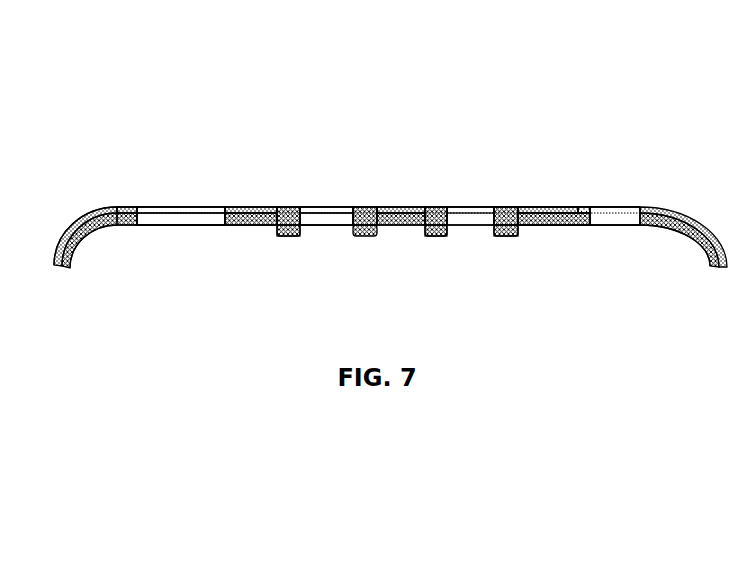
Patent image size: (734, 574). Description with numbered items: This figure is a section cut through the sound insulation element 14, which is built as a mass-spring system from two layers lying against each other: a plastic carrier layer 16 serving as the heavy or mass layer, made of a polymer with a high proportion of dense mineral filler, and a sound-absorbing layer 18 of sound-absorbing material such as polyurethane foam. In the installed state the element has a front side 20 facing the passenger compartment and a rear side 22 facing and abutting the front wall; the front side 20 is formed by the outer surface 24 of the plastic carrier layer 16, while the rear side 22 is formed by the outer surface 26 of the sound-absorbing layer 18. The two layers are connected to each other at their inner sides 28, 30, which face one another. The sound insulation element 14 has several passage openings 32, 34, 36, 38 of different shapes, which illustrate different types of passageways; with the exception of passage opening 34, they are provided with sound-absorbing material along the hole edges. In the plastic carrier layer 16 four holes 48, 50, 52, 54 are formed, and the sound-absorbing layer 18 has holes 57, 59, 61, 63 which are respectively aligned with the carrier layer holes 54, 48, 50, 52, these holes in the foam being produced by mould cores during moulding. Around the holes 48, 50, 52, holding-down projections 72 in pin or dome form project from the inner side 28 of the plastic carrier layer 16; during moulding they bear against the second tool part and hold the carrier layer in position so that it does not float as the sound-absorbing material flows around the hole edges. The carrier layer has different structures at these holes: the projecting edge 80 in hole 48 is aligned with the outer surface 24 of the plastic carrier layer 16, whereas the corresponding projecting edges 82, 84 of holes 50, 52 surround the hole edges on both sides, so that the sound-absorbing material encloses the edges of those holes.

The sound insulation element 14 is at (694, 166).
The plastic carrier layer 16 is at (233, 226).
The sound-absorbing layer 18 is at (96, 214).
The front side 20 is at (590, 252).
The rear side 22 is at (394, 158).
The outer surface of the plastic carrier layer 24 is at (553, 226).
The outer surface of the sound-absorbing layer 26 is at (560, 207).
The inner side of the plastic carrier layer 28 is at (118, 207).
The inner side of the sound-absorbing layer 30 is at (118, 228).
The passage opening 32 is at (628, 207).
The passage opening 34 is at (488, 207).
The passage opening 36 is at (350, 207).
The passage opening 38 is at (200, 207).
The hole 48 is at (573, 226).
The hole 50 is at (447, 228).
The hole 52 is at (345, 228).
The hole 54 is at (150, 226).
The hole in the sound-absorbing layer 57 is at (618, 207).
The hole in the sound-absorbing layer 59 is at (472, 207).
The hole in the sound-absorbing layer 61 is at (333, 207).
The hole in the sound-absorbing layer 63 is at (188, 207).
The holding-down projections 72 is at (283, 207).
The projecting edge 80 is at (637, 226).
The projecting edge 82 is at (495, 225).
The projecting edge 84 is at (303, 226).